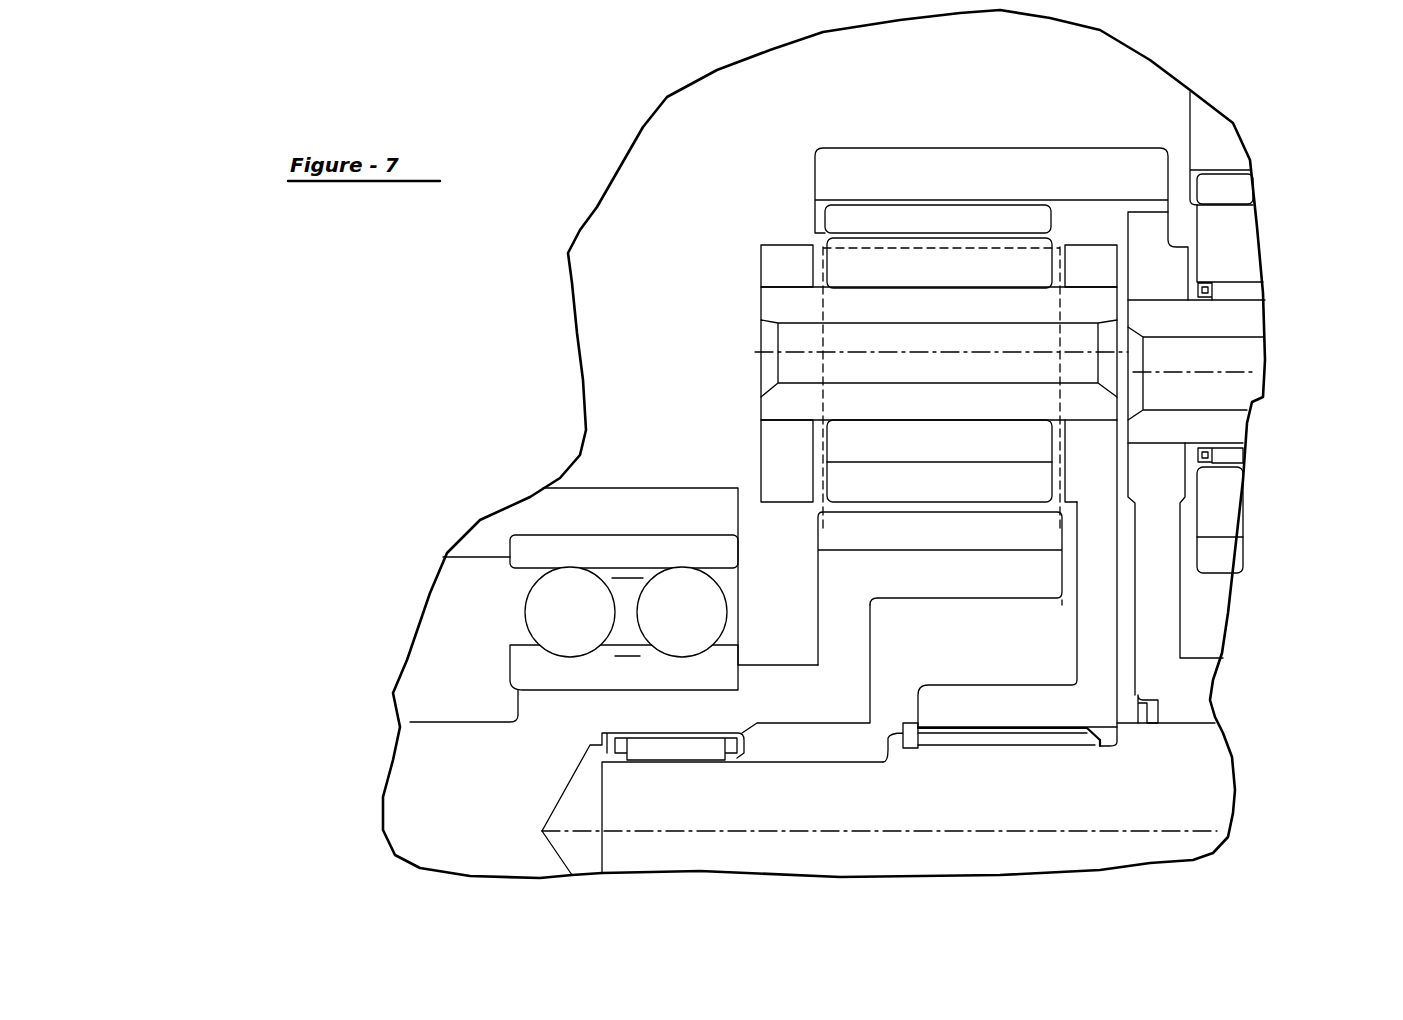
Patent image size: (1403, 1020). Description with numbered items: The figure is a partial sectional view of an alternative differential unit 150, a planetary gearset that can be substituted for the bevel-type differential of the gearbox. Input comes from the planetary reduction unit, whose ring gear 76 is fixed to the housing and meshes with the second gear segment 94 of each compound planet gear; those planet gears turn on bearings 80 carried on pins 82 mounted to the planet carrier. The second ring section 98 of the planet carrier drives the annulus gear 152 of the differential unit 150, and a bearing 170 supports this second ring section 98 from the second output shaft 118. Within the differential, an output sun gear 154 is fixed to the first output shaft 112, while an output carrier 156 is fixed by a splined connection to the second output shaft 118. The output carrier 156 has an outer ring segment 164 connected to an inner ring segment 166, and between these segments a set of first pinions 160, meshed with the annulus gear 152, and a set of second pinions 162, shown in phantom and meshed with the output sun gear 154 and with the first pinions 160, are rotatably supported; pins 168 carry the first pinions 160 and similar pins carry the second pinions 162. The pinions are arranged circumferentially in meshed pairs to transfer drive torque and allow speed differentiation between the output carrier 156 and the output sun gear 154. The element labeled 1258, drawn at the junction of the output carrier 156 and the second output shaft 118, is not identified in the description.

The differential unit 150 is at (995, 106).
The annulus gear 152 is at (1082, 160).
The first pinions 160 is at (882, 273).
The outer ring segment 164 is at (792, 267).
The pins 168 is at (787, 308).
The second pinions 162 is at (855, 515).
The output sun gear 154 is at (930, 585).
The output carrier 156 is at (975, 672).
The inner ring segment 166 is at (1093, 623).
The bearing 1258 is at (998, 735).
The second output shaft 118 is at (1215, 785).
The first output shaft 112 is at (425, 770).
The ring gear 76 is at (1228, 143).
The second gear segment 94 is at (1245, 241).
The second ring section 98 is at (1165, 272).
The pins 82 is at (1257, 317).
The bearings 80 is at (1232, 455).
The bearing 170 is at (1195, 712).